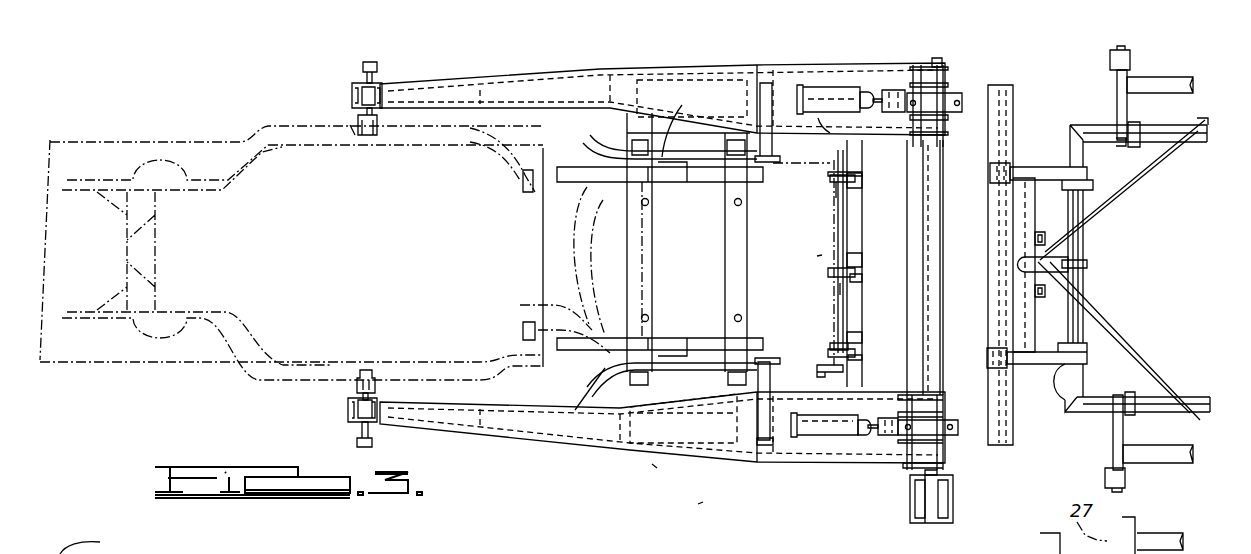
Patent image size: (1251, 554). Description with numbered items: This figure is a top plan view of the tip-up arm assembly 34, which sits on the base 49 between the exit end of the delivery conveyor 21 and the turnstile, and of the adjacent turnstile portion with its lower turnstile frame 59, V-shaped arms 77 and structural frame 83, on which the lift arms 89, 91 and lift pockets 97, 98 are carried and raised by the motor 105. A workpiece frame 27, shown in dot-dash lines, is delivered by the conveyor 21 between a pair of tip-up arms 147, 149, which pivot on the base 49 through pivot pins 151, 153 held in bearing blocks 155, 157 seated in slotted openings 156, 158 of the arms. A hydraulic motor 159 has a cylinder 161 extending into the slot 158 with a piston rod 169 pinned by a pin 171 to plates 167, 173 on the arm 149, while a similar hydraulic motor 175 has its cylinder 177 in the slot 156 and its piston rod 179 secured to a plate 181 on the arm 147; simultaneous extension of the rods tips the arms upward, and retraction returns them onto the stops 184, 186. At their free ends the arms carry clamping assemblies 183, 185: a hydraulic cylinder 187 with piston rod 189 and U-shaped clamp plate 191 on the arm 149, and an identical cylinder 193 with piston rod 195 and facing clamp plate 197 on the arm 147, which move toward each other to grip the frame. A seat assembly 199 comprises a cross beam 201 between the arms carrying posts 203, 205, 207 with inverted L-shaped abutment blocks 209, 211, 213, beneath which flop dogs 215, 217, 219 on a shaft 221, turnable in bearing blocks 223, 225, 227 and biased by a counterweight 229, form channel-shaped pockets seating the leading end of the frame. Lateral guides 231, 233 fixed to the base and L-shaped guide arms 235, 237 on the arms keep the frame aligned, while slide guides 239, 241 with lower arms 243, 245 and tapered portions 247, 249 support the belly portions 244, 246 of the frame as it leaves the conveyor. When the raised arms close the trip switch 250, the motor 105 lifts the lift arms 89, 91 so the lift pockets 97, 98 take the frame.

The delivery conveyor 21 is at (52, 370).
The workpiece frame 27 is at (165, 352).
The tip-up arm assembly 34 is at (697, 511).
The base 49 is at (655, 470).
The lower turnstile frame 59 is at (1130, 197).
The V-shaped arms 77 is at (1050, 256).
The structural frame 83 is at (1102, 367).
The lift arm 89 is at (1047, 158).
The lift arm 91 is at (1135, 112).
The lift pocket 97 is at (990, 176).
The lift pocket 98 is at (1130, 62).
The motor 105 is at (1048, 292).
The tip-up arm 147 is at (663, 70).
The tip-up arm 149 is at (665, 400).
The pivot pin 151 is at (930, 92).
The pivot pin 153 is at (942, 472).
The bearing block 155 is at (963, 102).
The slotted opening 156 is at (823, 85).
The bearing block 157 is at (950, 434).
The slotted opening 158 is at (852, 436).
The hydraulic motor 159 is at (1010, 95).
The cylinder 161 is at (833, 435).
The plate 167 is at (932, 420).
The piston rod 169 is at (886, 416).
The pin 171 is at (912, 355).
The plate 173 is at (910, 499).
The hydraulic motor 175 is at (812, 119).
The cylinder 177 is at (829, 139).
The piston rod 179 is at (868, 92).
The plate 181 is at (897, 127).
The workpiece frame clamping assembly 183 is at (346, 130).
The stop 184 is at (600, 460).
The workpiece frame clamping assembly 185 is at (355, 367).
The stop 186 is at (615, 62).
The hydraulic cylinder 187 is at (360, 440).
The piston rod 189 is at (350, 420).
The clamp plate 191 is at (376, 383).
The cylinder 193 is at (380, 75).
The piston rod 195 is at (352, 100).
The clamp plate 197 is at (367, 138).
The seat assembly 199 is at (812, 260).
The cross beam 201 is at (874, 263).
The post 203 is at (862, 188).
The post 205 is at (862, 258).
The post 207 is at (860, 333).
The abutment block 209 is at (852, 175).
The abutment block 211 is at (862, 280).
The abutment block 213 is at (862, 357).
The flop dog 215 is at (828, 180).
The flop dog 217 is at (838, 284).
The flop dog 219 is at (828, 353).
The shaft 221 is at (836, 234).
The bearing block 223 is at (836, 190).
The bearing block 225 is at (828, 272).
The bearing block 227 is at (835, 344).
The counterweight 229 is at (815, 371).
The lateral guide 231 is at (690, 121).
The lateral guide 233 is at (585, 398).
The guide arm 235 is at (765, 82).
The guide arm 237 is at (765, 447).
The slide guide 239 is at (692, 183).
The slide guide 241 is at (712, 320).
The lower arm 243 is at (590, 178).
The belly portion 244 is at (497, 136).
The lower arm 245 is at (590, 352).
The belly portion 246 is at (545, 305).
The tapered portion 247 is at (680, 182).
The tapered portion 249 is at (670, 338).
The trip switch 250 is at (958, 507).